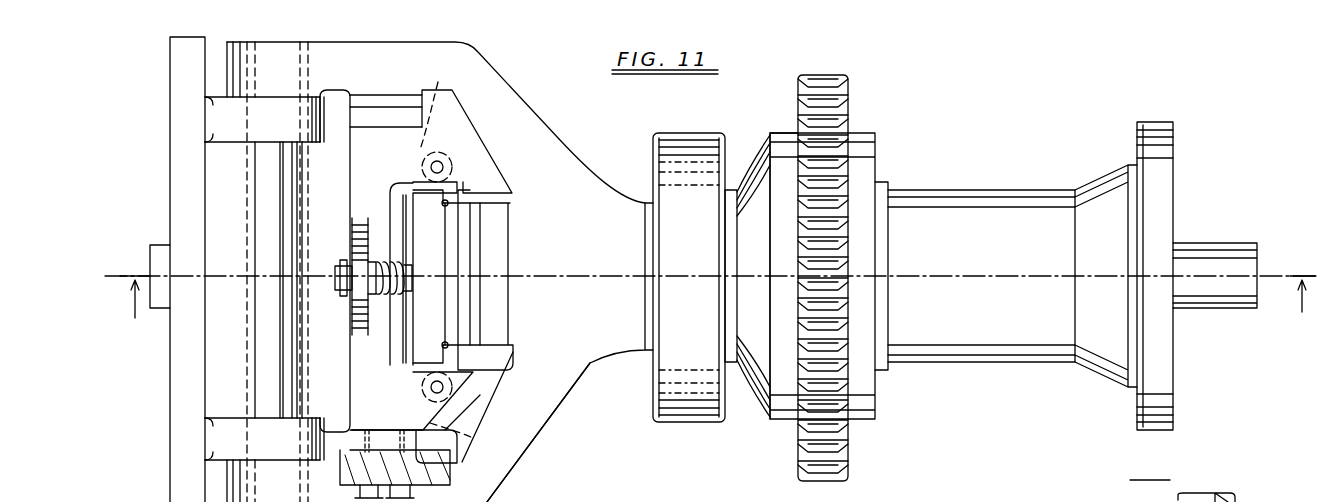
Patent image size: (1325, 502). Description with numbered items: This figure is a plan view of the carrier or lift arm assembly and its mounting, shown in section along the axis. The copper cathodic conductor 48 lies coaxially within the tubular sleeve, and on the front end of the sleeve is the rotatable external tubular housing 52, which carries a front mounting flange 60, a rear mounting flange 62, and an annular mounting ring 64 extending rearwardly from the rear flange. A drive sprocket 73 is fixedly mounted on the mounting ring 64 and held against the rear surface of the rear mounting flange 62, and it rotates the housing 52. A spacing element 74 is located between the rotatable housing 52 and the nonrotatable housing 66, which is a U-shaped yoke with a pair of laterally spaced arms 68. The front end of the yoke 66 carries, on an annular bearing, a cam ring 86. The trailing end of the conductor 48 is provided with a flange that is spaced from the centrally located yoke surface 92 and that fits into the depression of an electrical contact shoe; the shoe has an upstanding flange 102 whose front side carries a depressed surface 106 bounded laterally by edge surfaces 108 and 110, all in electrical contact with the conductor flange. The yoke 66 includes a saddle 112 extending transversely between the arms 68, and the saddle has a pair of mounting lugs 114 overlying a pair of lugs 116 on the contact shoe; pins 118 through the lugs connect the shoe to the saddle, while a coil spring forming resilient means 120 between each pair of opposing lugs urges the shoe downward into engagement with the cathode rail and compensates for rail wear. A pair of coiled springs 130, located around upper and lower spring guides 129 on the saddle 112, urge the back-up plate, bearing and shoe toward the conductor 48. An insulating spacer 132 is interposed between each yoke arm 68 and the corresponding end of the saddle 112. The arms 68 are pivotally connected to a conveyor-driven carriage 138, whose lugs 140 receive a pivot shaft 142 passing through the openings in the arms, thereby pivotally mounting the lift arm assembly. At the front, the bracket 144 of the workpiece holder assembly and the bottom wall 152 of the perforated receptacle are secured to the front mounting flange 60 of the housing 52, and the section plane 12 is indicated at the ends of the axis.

The section line 12 is at (708, 307).
The cathodic conductor 48 is at (1226, 291).
The external tubular housing 52 is at (1013, 207).
The front mounting flange 60 is at (1143, 155).
The rear mounting flange 62 is at (870, 183).
The annular mounting ring 64 is at (784, 317).
The nonrotatable housing 66 is at (500, 463).
The arms 68 is at (505, 100).
The drive sprocket 73 is at (800, 92).
The spacing element 74 is at (760, 158).
The cam ring 86 is at (660, 153).
The yoke surface 92 is at (500, 320).
The upstanding flange 102 is at (463, 347).
The depressed surface 106 is at (447, 259).
The edge surface 108 is at (447, 203).
The edge surface 110 is at (460, 362).
The saddle 112 is at (363, 366).
The mounting lugs 114 is at (467, 167).
The lugs 116 is at (469, 259).
The pins 118 is at (430, 163).
The resilient means 120 is at (416, 170).
The spring guides 129 is at (340, 278).
The coiled springs 130 is at (400, 281).
The insulating spacer 132 is at (330, 475).
The carriage 138 is at (182, 153).
The lugs 140 is at (228, 418).
The pivot shaft 142 is at (270, 322).
The bracket 144 is at (1135, 491).
The bottom wall 152 is at (1233, 492).